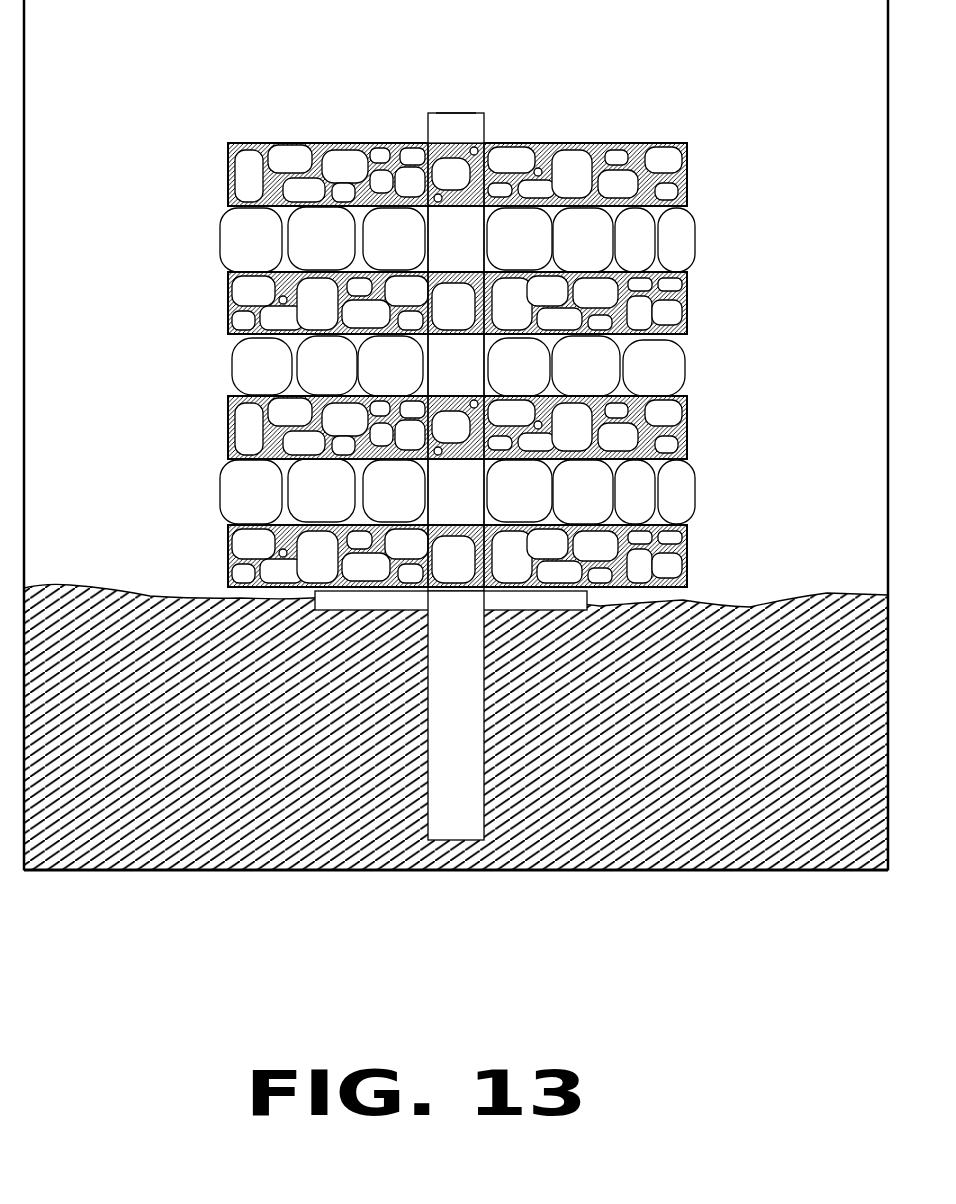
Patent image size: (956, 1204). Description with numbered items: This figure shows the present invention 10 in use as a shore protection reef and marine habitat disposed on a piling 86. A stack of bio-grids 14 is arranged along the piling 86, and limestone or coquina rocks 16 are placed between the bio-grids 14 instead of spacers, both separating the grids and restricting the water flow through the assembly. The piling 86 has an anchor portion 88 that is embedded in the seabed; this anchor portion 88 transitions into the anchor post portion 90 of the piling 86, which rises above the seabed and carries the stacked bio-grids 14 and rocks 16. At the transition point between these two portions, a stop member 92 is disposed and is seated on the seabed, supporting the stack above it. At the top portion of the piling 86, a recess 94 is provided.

The present invention 10 is at (456, 435).
The bio-grids 14 is at (228, 178).
The limestone or coquina rocks 16 is at (677, 365).
The piling 86 is at (484, 128).
The anchor portion 88 is at (427, 718).
The anchor post portion 90 is at (427, 126).
The stop member 92 is at (690, 600).
The recess 94 is at (455, 113).